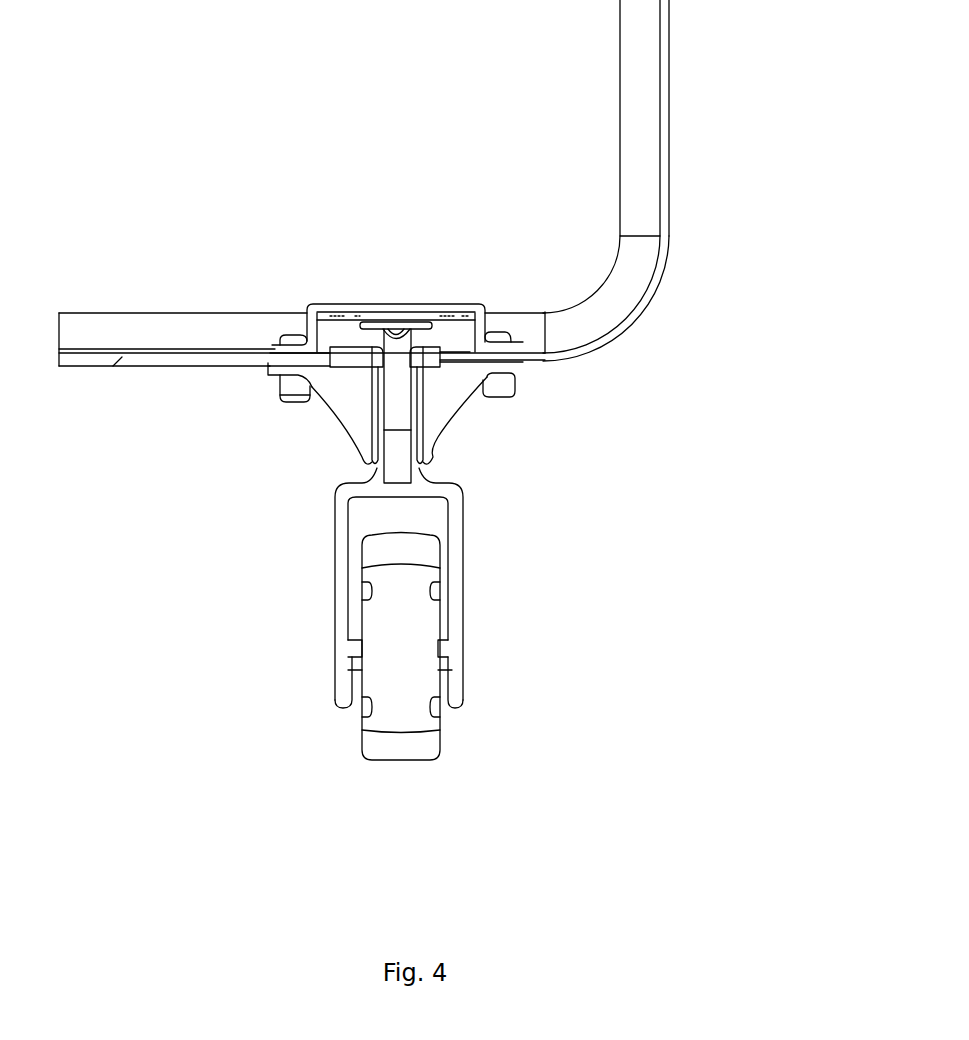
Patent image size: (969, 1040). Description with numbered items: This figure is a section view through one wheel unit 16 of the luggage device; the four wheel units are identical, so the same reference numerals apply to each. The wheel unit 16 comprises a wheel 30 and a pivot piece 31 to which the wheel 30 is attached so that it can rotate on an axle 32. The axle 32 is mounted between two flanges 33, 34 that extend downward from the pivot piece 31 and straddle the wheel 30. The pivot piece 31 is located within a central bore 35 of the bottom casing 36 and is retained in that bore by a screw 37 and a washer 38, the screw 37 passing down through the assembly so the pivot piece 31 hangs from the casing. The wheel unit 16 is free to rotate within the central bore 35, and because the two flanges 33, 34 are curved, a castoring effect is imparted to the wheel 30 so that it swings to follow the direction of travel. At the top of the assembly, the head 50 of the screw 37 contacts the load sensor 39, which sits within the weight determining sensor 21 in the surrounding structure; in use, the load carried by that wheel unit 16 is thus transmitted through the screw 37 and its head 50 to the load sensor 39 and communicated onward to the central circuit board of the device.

The wheel unit 16 is at (463, 540).
The weight determining sensor 21 is at (457, 303).
The wheel 30 is at (415, 665).
The pivot piece 31 is at (418, 476).
The axle 32 is at (353, 650).
The flange 33 is at (345, 578).
The flange 34 is at (462, 610).
The central bore 35 is at (423, 400).
The bottom casing 36 is at (345, 405).
The screw 37 is at (398, 368).
The washer 38 is at (362, 350).
The load sensor 39 is at (420, 323).
The head 50 is at (395, 322).